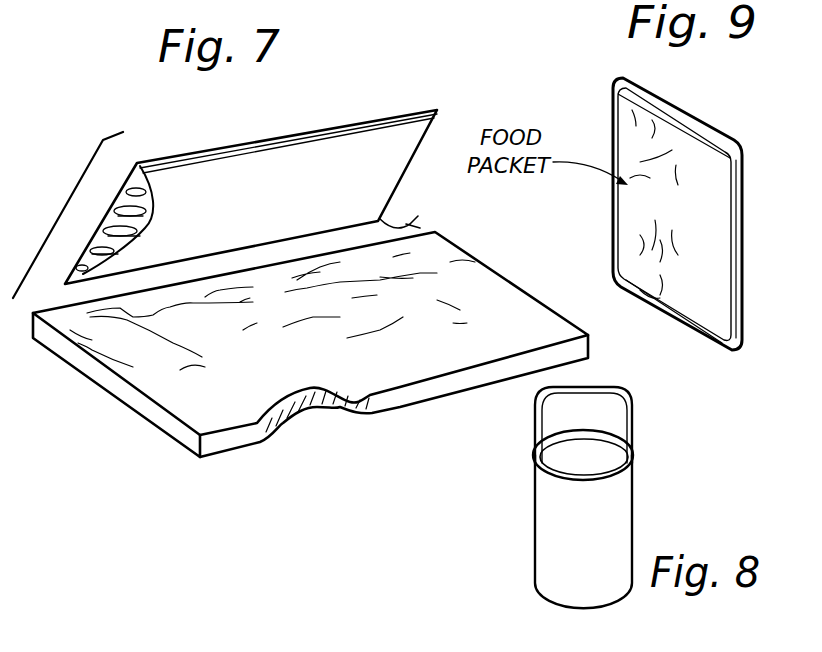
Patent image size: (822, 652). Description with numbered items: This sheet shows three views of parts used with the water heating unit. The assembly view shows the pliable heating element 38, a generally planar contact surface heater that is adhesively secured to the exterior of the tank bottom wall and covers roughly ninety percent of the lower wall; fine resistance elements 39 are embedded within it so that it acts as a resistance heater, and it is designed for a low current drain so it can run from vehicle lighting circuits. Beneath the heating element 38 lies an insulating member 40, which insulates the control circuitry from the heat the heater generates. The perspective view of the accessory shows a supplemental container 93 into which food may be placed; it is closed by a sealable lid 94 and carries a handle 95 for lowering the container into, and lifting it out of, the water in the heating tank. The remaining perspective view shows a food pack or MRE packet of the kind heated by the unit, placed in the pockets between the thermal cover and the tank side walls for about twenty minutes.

In FIG. 7, the heating element 38 is at (338, 128).
In FIG. 7, the fine resistance elements 39 is at (95, 232).
In FIG. 7, the insulating member 40 is at (128, 408).
In FIG. 8, the supplemental container 93 is at (623, 533).
In FIG. 8, the sealable lid 94 is at (612, 456).
In FIG. 8, the handle 95 is at (633, 410).